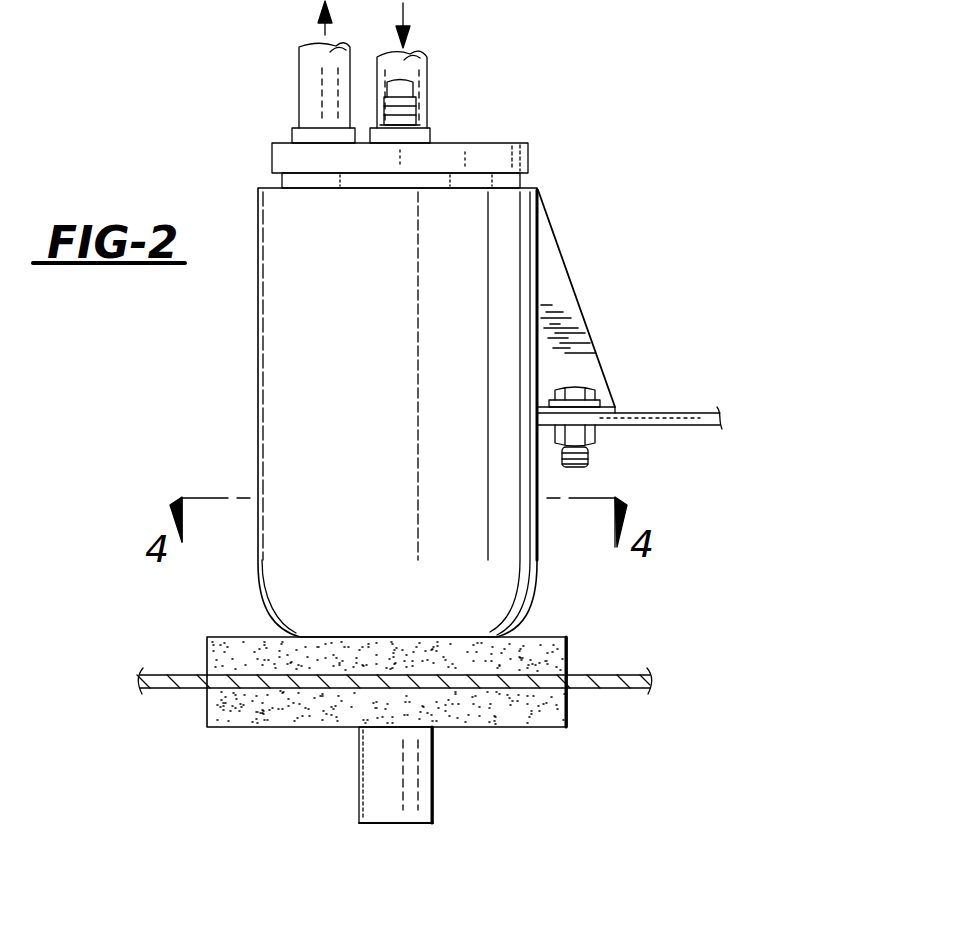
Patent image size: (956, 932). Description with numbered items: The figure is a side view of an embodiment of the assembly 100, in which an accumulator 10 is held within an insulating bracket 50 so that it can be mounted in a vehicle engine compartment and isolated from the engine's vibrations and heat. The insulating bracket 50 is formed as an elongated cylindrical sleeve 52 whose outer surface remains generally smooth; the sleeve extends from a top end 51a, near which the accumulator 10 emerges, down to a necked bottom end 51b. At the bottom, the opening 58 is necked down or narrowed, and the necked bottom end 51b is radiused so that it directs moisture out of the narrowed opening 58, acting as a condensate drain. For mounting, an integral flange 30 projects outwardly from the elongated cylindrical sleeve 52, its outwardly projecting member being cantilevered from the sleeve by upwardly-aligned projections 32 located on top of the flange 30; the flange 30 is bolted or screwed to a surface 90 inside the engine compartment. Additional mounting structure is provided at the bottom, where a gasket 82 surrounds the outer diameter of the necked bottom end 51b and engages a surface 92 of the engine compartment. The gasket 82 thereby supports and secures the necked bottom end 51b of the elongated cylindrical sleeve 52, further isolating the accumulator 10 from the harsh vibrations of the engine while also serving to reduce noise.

The assembly 100 is at (714, 126).
The accumulator 10 is at (503, 143).
The insulating bracket 50 is at (246, 228).
The top end 51a is at (264, 186).
The necked bottom end 51b is at (410, 825).
The elongated cylindrical sleeve 52 is at (258, 330).
The flange 30 is at (582, 242).
The upwardly-aligned projections 32 is at (565, 305).
The surface 90 is at (660, 413).
The gasket 82 is at (542, 660).
The surface 92 is at (617, 690).
The opening 58 is at (367, 838).